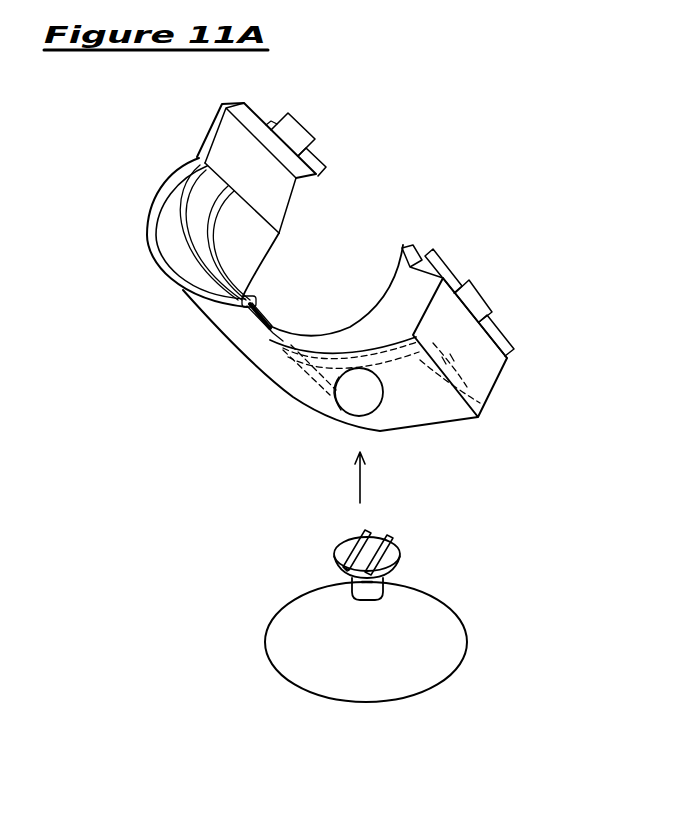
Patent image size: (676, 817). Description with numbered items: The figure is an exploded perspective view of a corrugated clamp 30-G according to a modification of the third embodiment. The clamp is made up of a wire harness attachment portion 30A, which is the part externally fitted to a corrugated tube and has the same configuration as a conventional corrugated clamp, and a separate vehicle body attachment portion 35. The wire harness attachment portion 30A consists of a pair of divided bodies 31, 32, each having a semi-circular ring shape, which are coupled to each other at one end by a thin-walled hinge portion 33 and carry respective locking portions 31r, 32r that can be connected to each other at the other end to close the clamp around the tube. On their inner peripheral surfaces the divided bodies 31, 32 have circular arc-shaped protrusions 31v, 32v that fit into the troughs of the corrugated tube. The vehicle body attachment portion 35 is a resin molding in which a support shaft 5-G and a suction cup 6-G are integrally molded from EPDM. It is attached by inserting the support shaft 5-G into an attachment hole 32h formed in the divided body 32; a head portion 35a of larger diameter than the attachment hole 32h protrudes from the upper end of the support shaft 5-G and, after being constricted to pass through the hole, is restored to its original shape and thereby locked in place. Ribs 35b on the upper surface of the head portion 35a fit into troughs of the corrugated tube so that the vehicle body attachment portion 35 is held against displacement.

The corrugated clamp 30-G is at (466, 81).
The wire harness attachment portion 30A is at (173, 305).
The divided body 31 is at (150, 225).
The locking portion 31r is at (300, 130).
The circular arc-shaped protrusion 31v is at (262, 240).
The thin-walled hinge portion 33 is at (252, 300).
The divided body 32 is at (428, 425).
The locking portion 32r is at (480, 302).
The attachment hole 32h is at (355, 383).
The circular arc-shaped protrusion 32v is at (470, 392).
The vehicle body attachment portion 35 is at (356, 716).
The head portion 35a is at (340, 553).
The ribs 35b is at (387, 540).
The support shaft 5-G is at (380, 598).
The suction cup 6-G is at (467, 637).